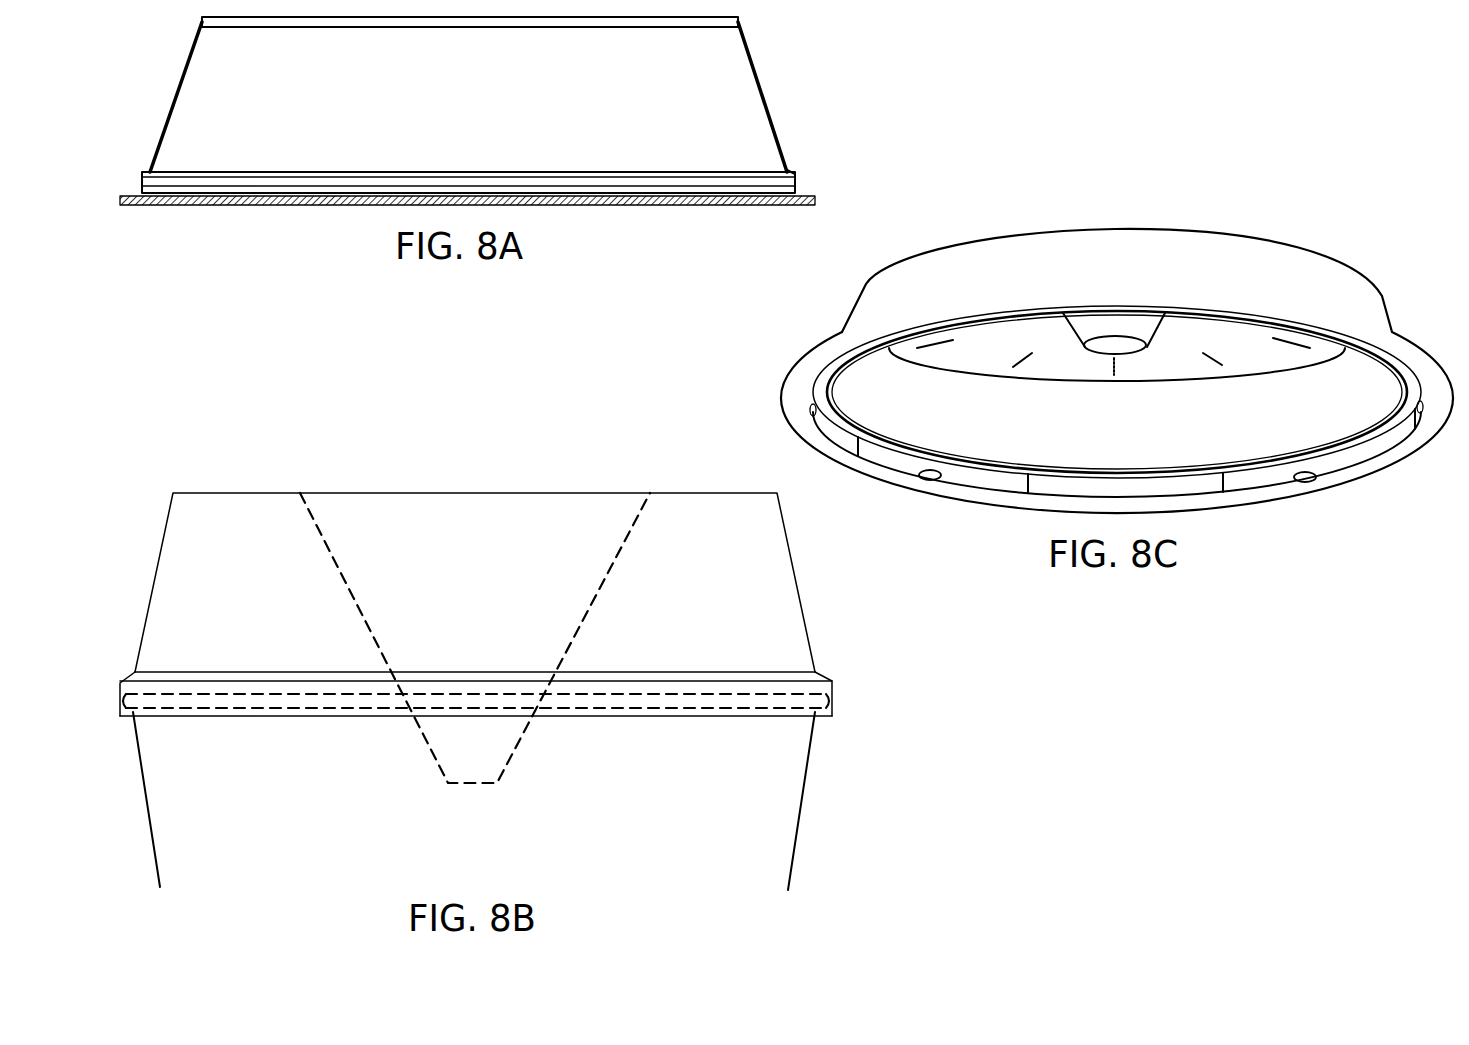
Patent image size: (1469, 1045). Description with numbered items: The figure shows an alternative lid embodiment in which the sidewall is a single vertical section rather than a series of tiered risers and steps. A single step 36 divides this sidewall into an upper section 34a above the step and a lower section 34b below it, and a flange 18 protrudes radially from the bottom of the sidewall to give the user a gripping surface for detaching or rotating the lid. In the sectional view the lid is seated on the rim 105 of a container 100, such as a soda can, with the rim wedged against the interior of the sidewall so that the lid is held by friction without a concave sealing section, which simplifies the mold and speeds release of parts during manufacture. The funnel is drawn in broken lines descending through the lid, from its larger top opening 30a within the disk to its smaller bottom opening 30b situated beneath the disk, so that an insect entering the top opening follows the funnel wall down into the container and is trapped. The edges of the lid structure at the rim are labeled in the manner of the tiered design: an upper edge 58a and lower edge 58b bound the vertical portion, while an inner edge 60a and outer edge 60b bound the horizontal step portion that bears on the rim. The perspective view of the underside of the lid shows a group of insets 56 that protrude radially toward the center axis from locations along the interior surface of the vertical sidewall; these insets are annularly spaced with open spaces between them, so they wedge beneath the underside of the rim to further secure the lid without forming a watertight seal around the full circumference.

In FIG. 8A, the upper section 34a is at (725, 103).
In FIG. 8A, the lower section 34b is at (795, 185).
In FIG. 8A, the step 36 is at (792, 172).
In FIG. 8A, the flange 18 is at (813, 202).
In FIG. 8B, the top opening 30a is at (300, 493).
In FIG. 8B, the bottom opening 30b is at (448, 783).
In FIG. 8B, the inner edge 60a is at (815, 672).
In FIG. 8B, the outer edge 60b is at (832, 681).
In FIG. 8B, the upper edge 58a is at (832, 684).
In FIG. 8B, the lower edge 58b is at (832, 710).
In FIG. 8B, the rim 105 is at (832, 703).
In FIG. 8B, the container 100 is at (806, 792).
In FIG. 8C, the insets 56 is at (940, 478).